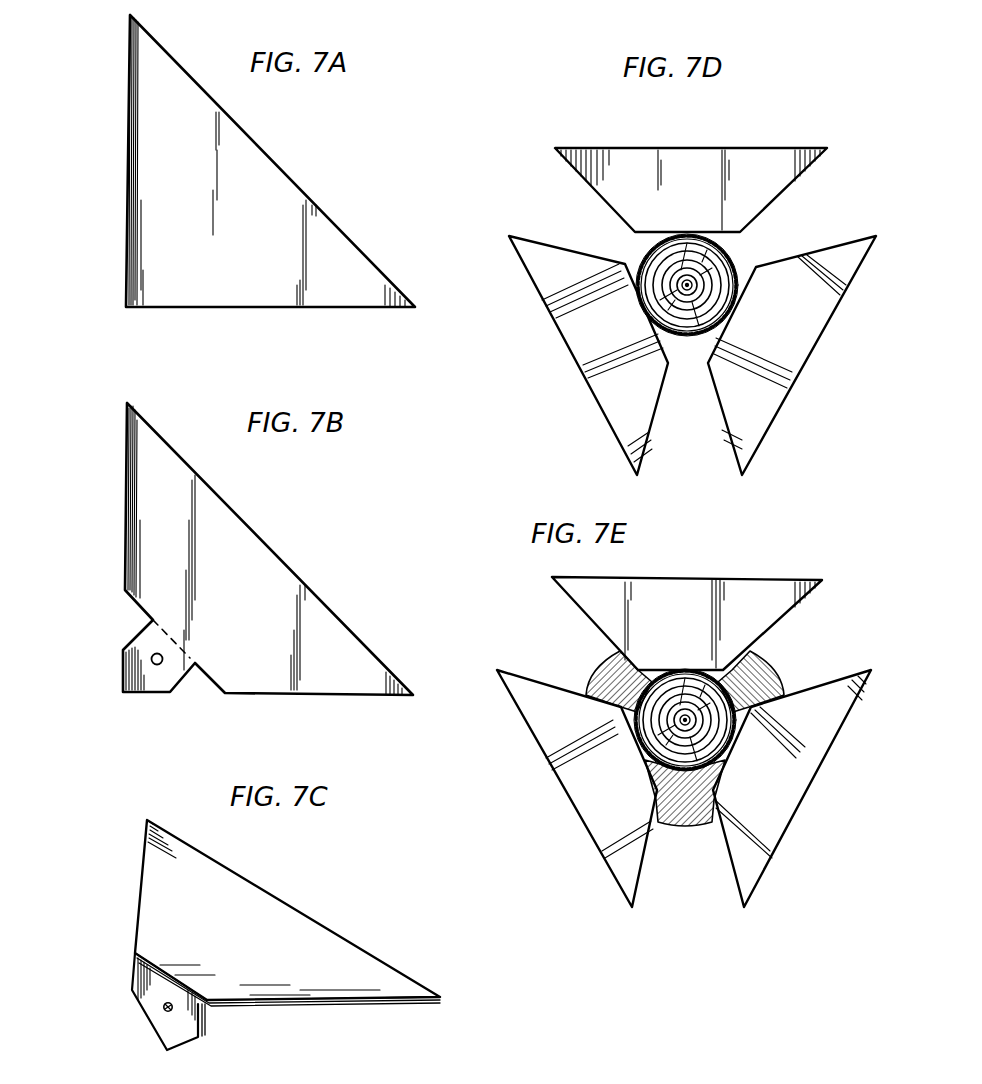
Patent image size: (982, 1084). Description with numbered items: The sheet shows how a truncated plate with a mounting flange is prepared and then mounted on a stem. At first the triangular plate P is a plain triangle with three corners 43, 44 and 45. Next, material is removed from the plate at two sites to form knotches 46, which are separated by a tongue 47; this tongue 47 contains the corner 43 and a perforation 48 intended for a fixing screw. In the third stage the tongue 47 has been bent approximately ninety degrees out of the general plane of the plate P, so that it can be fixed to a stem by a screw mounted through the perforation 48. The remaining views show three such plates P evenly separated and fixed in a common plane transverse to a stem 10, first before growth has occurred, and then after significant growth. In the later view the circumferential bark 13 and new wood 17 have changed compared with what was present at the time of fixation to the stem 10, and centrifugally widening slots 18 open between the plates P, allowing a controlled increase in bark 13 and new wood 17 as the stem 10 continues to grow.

In FIG. 7A, the triangular plate P is at (235, 118).
In FIG. 7B, the triangular plate P is at (335, 614).
In FIG. 7C, the triangular plate P is at (345, 935).
In FIG. 7D, the triangular plate P is at (751, 148).
In FIG. 7E, the triangular plate P is at (789, 580).
In FIG. 7A, the corner 43 is at (125, 308).
In FIG. 7B, the corner 43 is at (123, 692).
In FIG. 7A, the corner 44 is at (130, 15).
In FIG. 7A, the corner 45 is at (417, 307).
In FIG. 7B, the knotches 46 is at (142, 622).
In FIG. 7B, the tongue 47 is at (153, 682).
In FIG. 7C, the tongue 47 is at (212, 1020).
In FIG. 7B, the perforation 48 is at (150, 660).
In FIG. 7C, the perforation 48 is at (163, 1007).
In FIG. 7D, the stem 10 is at (735, 267).
In FIG. 7E, the bark 13 is at (765, 652).
In FIG. 7E, the new wood 17 is at (780, 675).
In FIG. 7E, the slots 18 is at (744, 918).